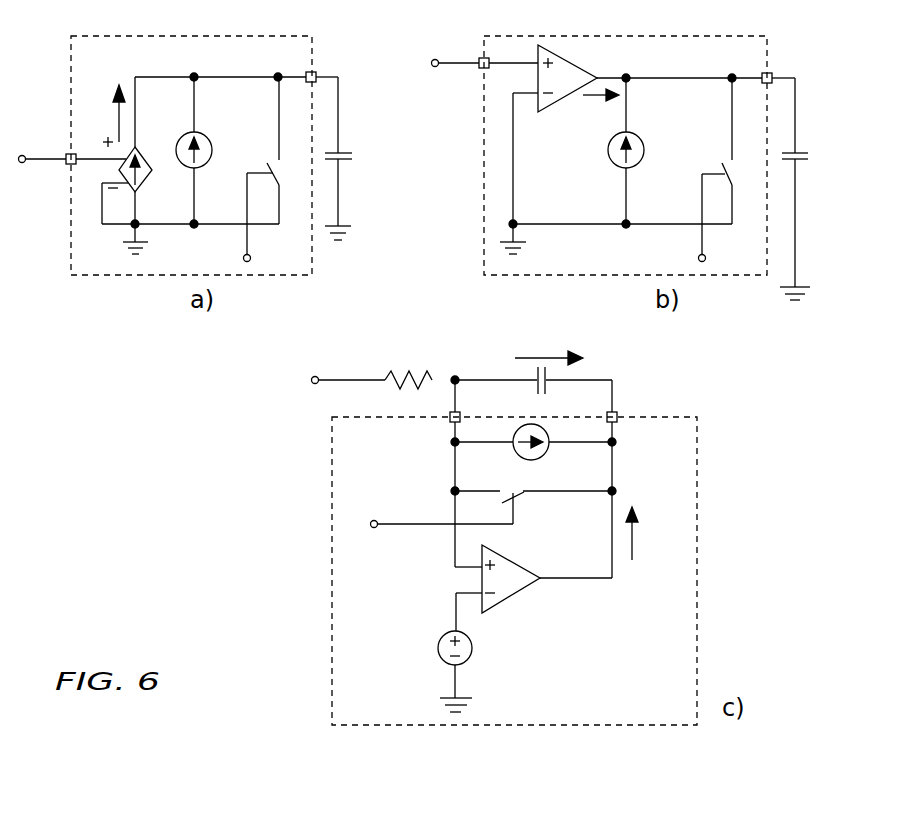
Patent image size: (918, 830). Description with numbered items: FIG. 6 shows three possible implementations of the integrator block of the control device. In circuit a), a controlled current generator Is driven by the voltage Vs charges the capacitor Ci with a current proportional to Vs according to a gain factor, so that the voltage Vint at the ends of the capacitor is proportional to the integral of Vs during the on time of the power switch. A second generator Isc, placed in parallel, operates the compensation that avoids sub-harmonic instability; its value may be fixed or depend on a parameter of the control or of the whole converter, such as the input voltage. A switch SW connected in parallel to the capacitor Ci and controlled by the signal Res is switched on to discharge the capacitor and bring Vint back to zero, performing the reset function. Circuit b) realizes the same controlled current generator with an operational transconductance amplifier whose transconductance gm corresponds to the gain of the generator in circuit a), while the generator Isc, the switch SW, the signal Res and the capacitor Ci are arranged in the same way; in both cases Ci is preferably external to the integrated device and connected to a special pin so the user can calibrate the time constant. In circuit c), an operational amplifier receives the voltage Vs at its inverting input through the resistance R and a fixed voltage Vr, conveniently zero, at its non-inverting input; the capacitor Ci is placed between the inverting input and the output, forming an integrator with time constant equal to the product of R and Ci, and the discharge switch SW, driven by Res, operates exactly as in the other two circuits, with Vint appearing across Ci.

The voltage Vs is at (279, 206).
The voltage Vint is at (565, 205).
The current generator Is is at (380, 322).
The generator Isc is at (396, 277).
The switch SW is at (478, 304).
The signal Res is at (475, 350).
The capacitor Ci is at (583, 245).
The transconductance gm is at (566, 130).
The resistance R is at (408, 365).
The fixed voltage Vr is at (438, 648).